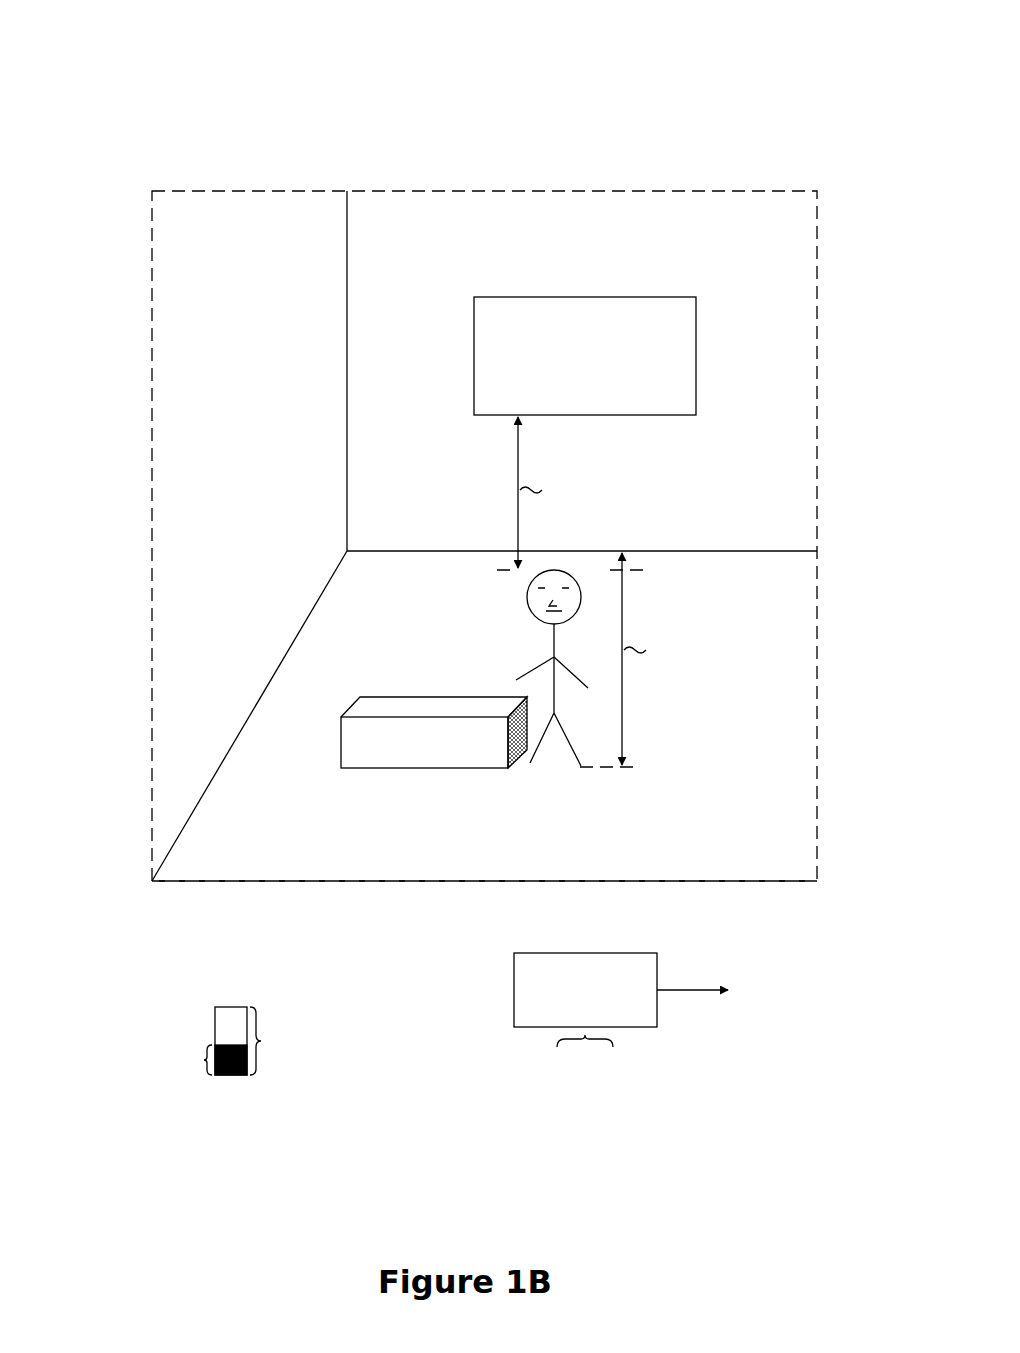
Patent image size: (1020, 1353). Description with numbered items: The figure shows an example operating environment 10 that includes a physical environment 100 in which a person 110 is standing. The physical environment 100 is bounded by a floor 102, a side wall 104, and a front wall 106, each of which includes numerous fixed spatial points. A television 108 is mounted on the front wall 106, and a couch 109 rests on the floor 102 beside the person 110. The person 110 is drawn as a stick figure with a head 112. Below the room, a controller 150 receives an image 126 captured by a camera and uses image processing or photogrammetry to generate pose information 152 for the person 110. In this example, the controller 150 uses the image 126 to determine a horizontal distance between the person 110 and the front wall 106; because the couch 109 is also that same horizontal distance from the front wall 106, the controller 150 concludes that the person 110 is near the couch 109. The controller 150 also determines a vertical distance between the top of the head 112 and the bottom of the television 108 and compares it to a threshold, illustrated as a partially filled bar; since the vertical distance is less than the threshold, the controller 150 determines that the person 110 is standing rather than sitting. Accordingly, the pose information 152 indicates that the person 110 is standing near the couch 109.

The operating environment 10 is at (108, 30).
The physical environment 100 is at (150, 186).
The floor 102 is at (484, 864).
The side wall 104 is at (249, 536).
The front wall 106 is at (582, 374).
The television 108 is at (585, 356).
The couch 109 is at (434, 732).
The person 110 is at (544, 752).
The head 112 is at (594, 572).
The image 126 is at (585, 1052).
The controller 150 is at (585, 990).
The pose information 152 is at (715, 992).